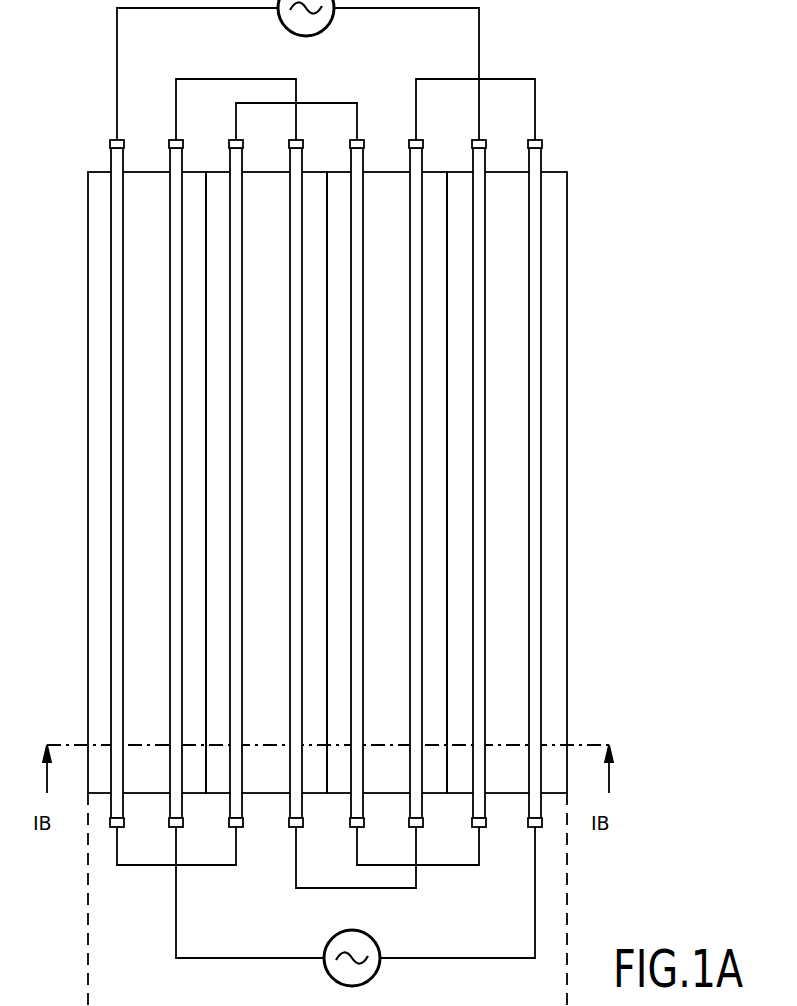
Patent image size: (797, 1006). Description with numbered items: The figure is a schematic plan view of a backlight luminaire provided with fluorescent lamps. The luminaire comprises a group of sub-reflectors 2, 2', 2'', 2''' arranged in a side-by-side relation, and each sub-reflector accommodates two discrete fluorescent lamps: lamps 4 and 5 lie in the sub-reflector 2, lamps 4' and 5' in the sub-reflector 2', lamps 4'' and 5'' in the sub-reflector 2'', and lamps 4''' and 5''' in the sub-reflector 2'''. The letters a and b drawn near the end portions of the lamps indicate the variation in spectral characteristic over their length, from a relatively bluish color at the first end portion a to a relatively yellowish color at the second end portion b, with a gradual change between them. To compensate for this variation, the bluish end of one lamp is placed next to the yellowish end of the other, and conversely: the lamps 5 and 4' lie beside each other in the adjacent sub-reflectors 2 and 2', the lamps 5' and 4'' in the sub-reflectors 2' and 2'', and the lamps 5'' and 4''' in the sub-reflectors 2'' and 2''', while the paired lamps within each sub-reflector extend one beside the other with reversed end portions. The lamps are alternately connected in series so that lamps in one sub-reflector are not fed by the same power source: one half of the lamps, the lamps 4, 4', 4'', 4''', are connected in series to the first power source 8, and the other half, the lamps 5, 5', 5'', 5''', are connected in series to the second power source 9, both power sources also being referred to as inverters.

The sub-reflector 2 is at (125, 482).
The sub-reflector 2' is at (186, 482).
The sub-reflector 2'' is at (479, 482).
The sub-reflector 2''' is at (541, 482).
The fluorescent lamp 4 is at (91, 484).
The fluorescent lamp 4' is at (150, 484).
The fluorescent lamp 4'' is at (490, 484).
The fluorescent lamp 4''' is at (553, 484).
The fluorescent lamp 5 is at (120, 484).
The fluorescent lamp 5' is at (180, 484).
The fluorescent lamp 5'' is at (520, 484).
The fluorescent lamp 5''' is at (581, 484).
The first power source 8 is at (282, 22).
The second power source 9 is at (372, 968).